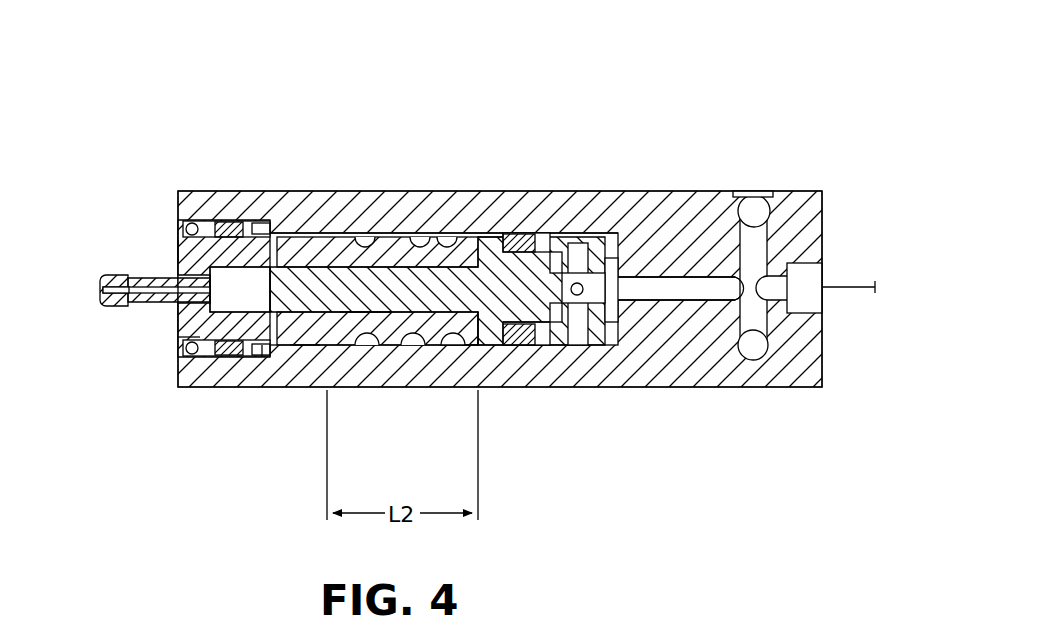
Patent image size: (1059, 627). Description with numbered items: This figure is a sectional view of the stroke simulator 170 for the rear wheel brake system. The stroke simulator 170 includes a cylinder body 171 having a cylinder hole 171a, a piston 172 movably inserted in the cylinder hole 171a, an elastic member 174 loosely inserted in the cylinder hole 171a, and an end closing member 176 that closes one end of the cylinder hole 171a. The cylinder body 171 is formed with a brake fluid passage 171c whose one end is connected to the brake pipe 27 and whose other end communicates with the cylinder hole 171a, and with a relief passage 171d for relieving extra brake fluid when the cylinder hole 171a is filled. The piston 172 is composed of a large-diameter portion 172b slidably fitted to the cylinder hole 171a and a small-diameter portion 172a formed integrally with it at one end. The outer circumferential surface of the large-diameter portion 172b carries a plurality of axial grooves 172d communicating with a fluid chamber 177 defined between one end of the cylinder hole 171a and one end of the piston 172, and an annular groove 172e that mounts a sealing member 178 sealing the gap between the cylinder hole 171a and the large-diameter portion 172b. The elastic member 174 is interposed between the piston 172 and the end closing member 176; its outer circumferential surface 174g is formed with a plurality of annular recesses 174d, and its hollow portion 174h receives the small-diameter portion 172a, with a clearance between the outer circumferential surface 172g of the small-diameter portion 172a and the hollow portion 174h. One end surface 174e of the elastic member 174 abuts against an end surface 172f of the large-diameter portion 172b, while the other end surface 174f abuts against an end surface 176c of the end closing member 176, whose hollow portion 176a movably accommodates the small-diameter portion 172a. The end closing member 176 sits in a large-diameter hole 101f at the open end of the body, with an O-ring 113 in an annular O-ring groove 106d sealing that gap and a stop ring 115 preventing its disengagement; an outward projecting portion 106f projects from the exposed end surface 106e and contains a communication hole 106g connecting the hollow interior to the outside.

The stroke simulator 170 is at (176, 100).
The cylinder body 171 is at (688, 188).
The cylinder hole 171a is at (292, 191).
The brake fluid passage 171c is at (690, 300).
The relief passage 171d is at (757, 360).
The piston 172 is at (545, 262).
The small-diameter portion 172a is at (262, 293).
The large-diameter portion 172b is at (492, 192).
The axial grooves 172d is at (607, 258).
The annular groove 172e is at (497, 390).
The end surface of the large-diameter portion 172f is at (457, 390).
The outer circumferential surface of the small-diameter portion 172g is at (268, 192).
The elastic member 174 is at (403, 237).
The annular recesses 174d is at (375, 192).
The end surface of the elastic member 174e is at (481, 392).
The other end surface of the elastic member 174f is at (300, 390).
The outer circumferential surface of the elastic member 174g is at (342, 192).
The hollow portion of the elastic member 174h is at (278, 390).
The end closing member 176 is at (172, 258).
The hollow portion of the end closing member 176a is at (262, 358).
The end surface of the end closing member 176c is at (360, 390).
The fluid chamber 177 is at (630, 300).
The sealing member 178 is at (532, 192).
The O-ring 113 is at (222, 222).
The stop ring 115 is at (183, 360).
The large-diameter hole 101f is at (178, 337).
The annular O-ring groove 106d is at (203, 380).
The end surface 106e is at (175, 249).
The outward projecting portion 106f is at (113, 275).
The communication hole 106g is at (100, 289).
The brake pipe 27 is at (846, 287).